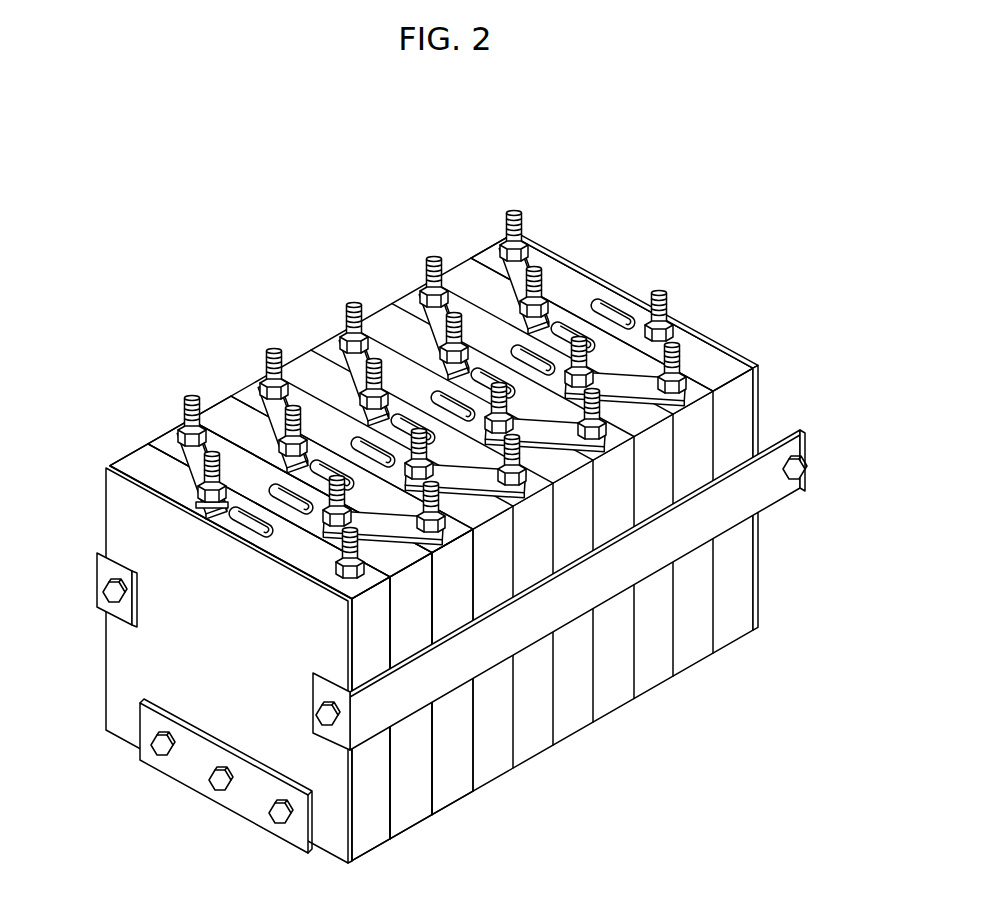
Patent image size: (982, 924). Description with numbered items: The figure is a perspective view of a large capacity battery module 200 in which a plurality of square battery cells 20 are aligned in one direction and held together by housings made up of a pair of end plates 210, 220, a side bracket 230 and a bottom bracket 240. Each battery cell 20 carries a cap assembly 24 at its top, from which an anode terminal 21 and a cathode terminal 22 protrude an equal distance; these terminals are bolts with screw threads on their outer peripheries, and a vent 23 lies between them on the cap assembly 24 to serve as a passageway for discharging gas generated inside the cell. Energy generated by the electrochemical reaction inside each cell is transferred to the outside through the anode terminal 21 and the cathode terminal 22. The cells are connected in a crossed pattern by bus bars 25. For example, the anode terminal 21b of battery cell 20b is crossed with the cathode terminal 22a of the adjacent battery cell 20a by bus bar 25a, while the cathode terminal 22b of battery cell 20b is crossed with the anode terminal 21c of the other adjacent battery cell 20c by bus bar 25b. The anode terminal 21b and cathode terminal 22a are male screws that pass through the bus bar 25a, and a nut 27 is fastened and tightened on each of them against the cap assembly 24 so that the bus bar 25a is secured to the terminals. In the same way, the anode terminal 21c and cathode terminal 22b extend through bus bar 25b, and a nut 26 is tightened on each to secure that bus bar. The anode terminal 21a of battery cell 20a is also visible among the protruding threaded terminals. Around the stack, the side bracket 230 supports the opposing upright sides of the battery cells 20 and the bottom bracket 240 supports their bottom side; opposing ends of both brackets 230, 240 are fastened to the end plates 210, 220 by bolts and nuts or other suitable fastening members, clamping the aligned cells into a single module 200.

The battery module 200 is at (166, 255).
The battery cell 20 is at (458, 563).
The battery cell 20a is at (372, 836).
The battery cell 20b is at (410, 808).
The battery cell 20c is at (448, 787).
The anode terminal 21 is at (524, 204).
The anode terminal 21a is at (338, 532).
The anode terminal 21b is at (190, 399).
The anode terminal 21c is at (430, 483).
The cathode terminal 22 is at (661, 287).
The cathode terminal 22a is at (215, 450).
The cathode terminal 22b is at (336, 506).
The vent 23 is at (608, 312).
The cap assembly 24 is at (560, 278).
The bus bar 25 is at (491, 258).
The bus bar 25a is at (174, 436).
The bus bar 25b is at (370, 515).
The nut 26 is at (268, 382).
The nut 27 is at (194, 507).
The end plate 210 is at (128, 671).
The end plate 220 is at (765, 559).
The side bracket 230 is at (90, 588).
The bottom bracket 240 is at (193, 766).